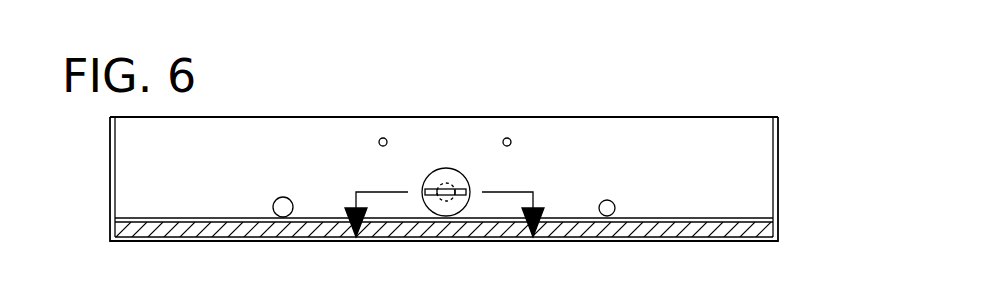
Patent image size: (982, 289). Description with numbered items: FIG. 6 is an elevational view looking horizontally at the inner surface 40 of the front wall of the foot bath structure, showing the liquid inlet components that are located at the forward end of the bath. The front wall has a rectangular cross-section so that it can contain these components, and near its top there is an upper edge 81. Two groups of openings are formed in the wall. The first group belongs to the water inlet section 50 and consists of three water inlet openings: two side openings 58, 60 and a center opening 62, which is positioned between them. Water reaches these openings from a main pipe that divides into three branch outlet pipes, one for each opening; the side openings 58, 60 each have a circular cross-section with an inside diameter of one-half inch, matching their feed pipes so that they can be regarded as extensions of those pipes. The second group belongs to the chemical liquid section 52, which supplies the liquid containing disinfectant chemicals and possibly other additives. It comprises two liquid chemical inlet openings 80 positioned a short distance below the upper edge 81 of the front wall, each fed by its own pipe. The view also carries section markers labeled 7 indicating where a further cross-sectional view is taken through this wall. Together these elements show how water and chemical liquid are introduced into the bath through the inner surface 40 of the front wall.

The inner surface of the front wall 40 is at (650, 143).
The upper edge of the front wall 81 is at (614, 118).
The chemical liquid section 52 is at (310, 127).
The water inlet section 50 is at (272, 193).
The side opening 58 is at (273, 208).
The side opening 60 is at (613, 203).
The liquid chemical inlet opening 80 is at (383, 138).
The center opening 62 is at (448, 168).
The section line 7- 7 is at (444, 227).